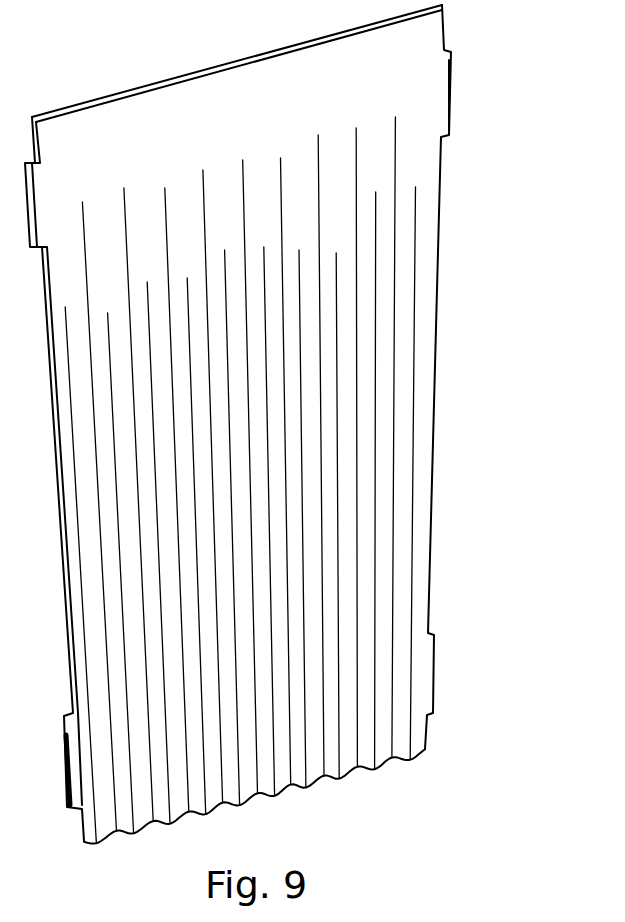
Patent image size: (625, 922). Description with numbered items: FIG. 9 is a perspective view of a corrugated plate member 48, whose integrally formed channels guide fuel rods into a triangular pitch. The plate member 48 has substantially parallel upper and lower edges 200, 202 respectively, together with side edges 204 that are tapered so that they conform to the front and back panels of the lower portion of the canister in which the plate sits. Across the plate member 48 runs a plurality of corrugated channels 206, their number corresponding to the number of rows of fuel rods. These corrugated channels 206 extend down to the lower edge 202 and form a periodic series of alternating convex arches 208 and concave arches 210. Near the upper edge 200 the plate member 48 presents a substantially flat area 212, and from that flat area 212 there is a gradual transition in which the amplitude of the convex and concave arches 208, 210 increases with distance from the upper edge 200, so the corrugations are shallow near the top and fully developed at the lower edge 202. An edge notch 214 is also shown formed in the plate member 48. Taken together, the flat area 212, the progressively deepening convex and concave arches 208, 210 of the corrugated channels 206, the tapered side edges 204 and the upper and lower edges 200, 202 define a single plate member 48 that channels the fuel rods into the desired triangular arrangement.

The plate member 48 is at (312, 446).
The upper edge 200 is at (192, 75).
The lower edge 202 is at (425, 752).
The side edges 204 is at (435, 385).
The corrugated channels 206 is at (372, 498).
The convex arches 208 is at (293, 787).
The concave arches 210 is at (293, 787).
The flat area 212 is at (263, 143).
The edge notch 214 is at (450, 115).